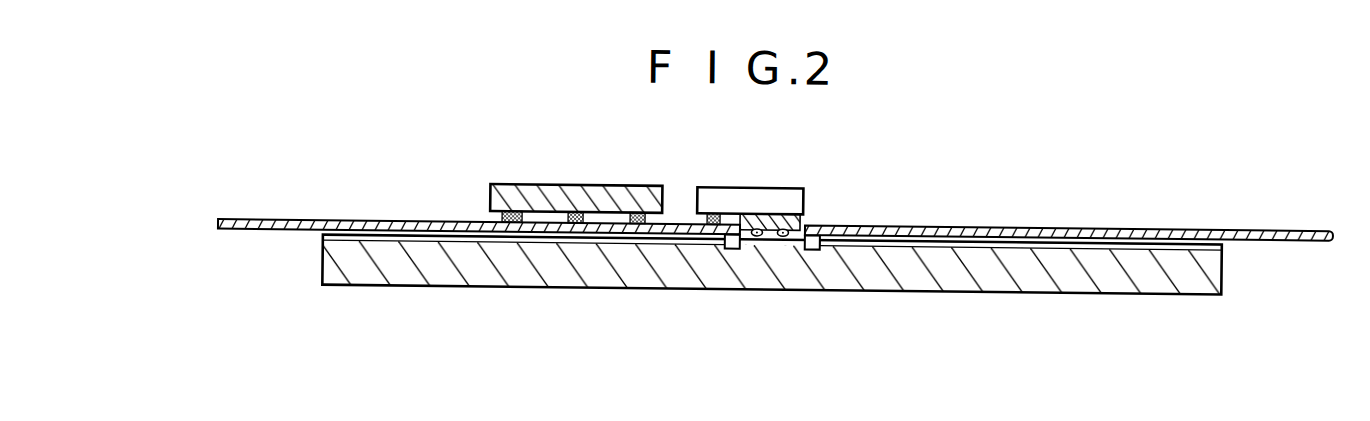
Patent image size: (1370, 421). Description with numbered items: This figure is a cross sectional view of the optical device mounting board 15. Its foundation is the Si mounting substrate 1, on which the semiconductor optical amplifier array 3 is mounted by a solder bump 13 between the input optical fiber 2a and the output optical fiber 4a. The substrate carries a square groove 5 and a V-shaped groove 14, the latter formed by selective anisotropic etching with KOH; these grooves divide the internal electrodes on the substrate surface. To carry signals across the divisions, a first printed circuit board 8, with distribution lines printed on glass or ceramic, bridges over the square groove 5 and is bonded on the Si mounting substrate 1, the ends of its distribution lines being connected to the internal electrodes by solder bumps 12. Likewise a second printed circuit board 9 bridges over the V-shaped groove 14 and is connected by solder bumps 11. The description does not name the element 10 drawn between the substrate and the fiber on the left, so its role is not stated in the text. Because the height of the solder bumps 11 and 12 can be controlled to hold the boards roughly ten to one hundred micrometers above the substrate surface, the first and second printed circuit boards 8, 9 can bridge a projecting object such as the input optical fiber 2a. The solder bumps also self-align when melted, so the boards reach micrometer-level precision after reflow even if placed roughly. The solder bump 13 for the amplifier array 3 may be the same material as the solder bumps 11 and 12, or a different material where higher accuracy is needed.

The Si mounting substrate 1 is at (1157, 263).
The input optical fiber 2a is at (260, 218).
The semiconductor optical amplifier array 3 is at (771, 225).
The output optical fiber 4a is at (1020, 218).
The square groove 5 is at (727, 242).
The first printed circuit board 8 is at (800, 181).
The second printed circuit board 9 is at (510, 180).
The adhesive layer 10 is at (545, 236).
The solder bump 11 is at (577, 209).
The solder bump 12 is at (714, 208).
The solder bump 13 is at (757, 231).
The V-shaped groove 14 is at (1013, 236).
The optical device mounting board 15 is at (1163, 176).